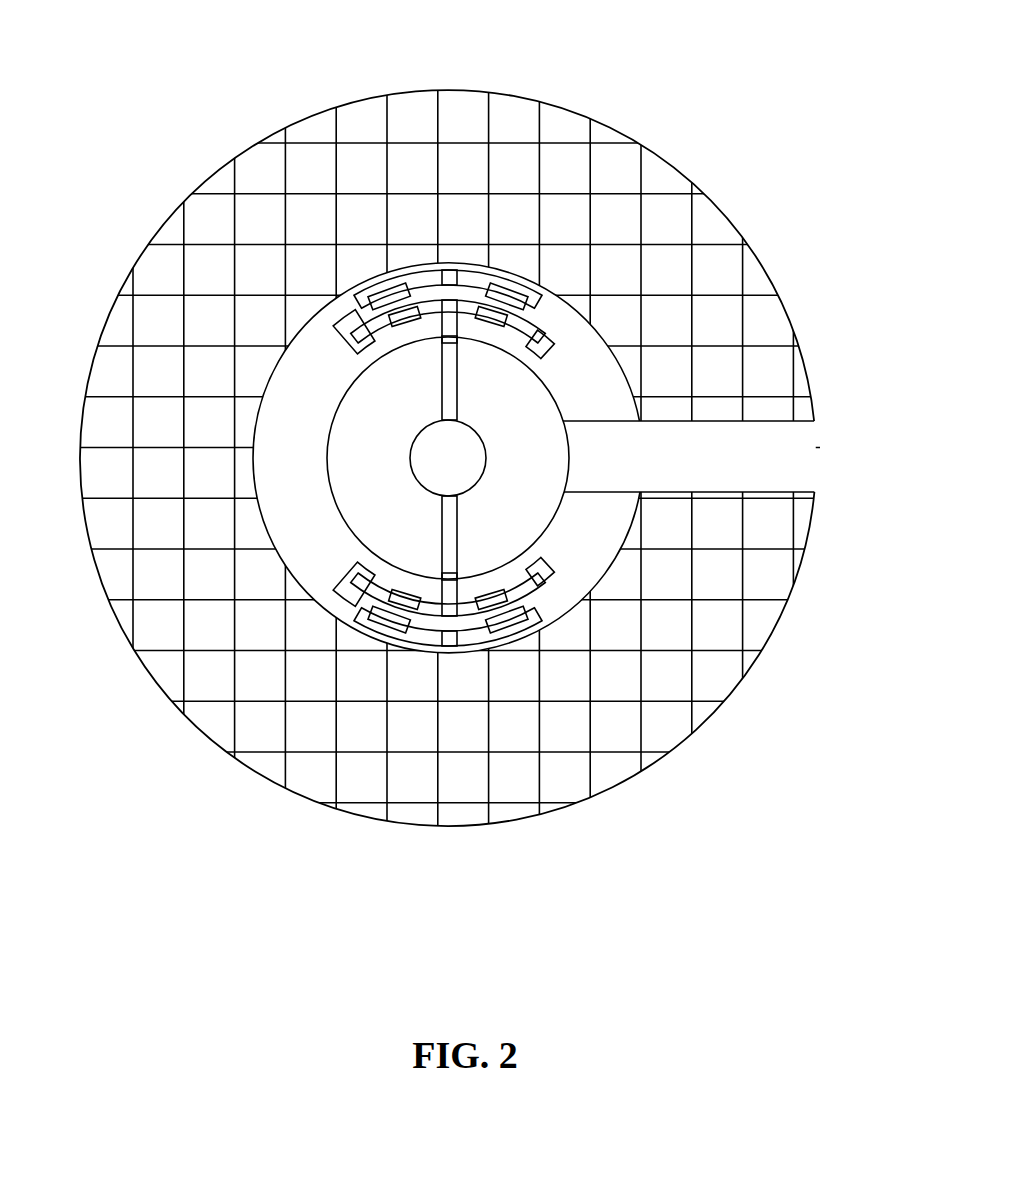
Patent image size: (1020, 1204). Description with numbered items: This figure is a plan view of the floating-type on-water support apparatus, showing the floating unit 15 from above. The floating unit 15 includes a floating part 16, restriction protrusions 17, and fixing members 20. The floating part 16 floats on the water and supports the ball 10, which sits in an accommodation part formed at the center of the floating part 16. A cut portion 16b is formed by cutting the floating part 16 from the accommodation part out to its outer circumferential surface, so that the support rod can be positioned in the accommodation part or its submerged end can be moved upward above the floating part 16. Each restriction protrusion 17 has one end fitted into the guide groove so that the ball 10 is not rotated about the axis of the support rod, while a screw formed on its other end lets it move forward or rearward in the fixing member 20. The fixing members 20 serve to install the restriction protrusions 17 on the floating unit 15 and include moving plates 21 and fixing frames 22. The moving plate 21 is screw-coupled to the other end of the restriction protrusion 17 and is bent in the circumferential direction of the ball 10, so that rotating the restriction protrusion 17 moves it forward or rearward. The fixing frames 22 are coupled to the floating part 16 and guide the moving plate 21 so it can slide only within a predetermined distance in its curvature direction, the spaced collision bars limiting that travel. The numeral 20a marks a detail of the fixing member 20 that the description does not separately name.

The floating unit 15 is at (588, 88).
The floating part 16 is at (172, 278).
The cut portion 16b is at (733, 494).
The ball 10 is at (342, 442).
The restriction protrusion 17 is at (468, 639).
The fixing member 20 is at (352, 609).
The tab 20a is at (391, 634).
The moving plate 21 is at (547, 563).
The fixing frame 22 is at (552, 590).